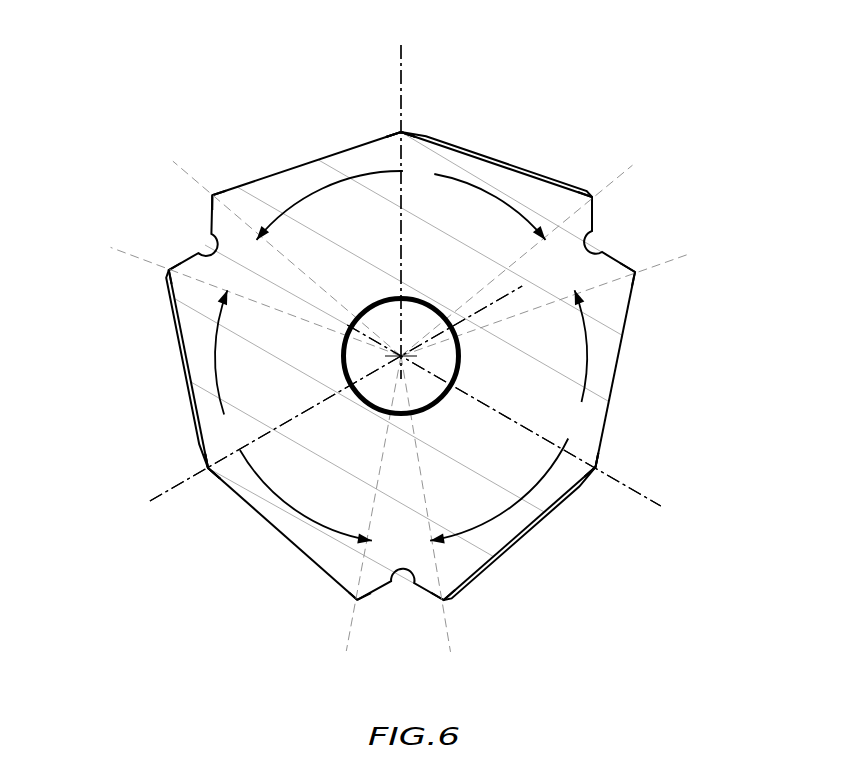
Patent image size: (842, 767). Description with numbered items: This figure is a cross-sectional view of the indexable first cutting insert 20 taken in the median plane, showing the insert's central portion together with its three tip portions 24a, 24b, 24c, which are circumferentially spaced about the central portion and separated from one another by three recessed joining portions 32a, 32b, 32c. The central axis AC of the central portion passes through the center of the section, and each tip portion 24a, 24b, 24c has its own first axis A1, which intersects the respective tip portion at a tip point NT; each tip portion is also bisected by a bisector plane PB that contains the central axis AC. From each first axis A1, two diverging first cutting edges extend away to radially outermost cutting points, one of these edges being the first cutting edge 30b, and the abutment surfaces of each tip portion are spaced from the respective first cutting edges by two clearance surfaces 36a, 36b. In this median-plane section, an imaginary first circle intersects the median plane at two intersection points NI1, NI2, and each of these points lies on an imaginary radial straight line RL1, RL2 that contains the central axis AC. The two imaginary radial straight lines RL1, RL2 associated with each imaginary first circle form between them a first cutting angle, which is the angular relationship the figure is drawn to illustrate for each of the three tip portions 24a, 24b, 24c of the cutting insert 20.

The first cutting insert 20 is at (389, 361).
The tip portion 24a is at (388, 148).
The tip portion 24b is at (602, 428).
The tip portion 24c is at (208, 441).
The first cutting edge 30b is at (517, 165).
The recessed joining portion 32a is at (599, 246).
The recessed joining portion 32b is at (400, 588).
The recessed joining portion 32c is at (204, 242).
The clearance surface 36a is at (288, 170).
The clearance surface 36b is at (537, 176).
The tip point NT is at (403, 129).
The intersection point NI1 is at (212, 198).
The intersection point NI2 is at (171, 272).
The imaginary radial straight line RL1 is at (436, 415).
The imaginary radial straight line RL2 is at (370, 410).
The first axis A1 is at (400, 274).
The bisector plane PB is at (400, 274).
The central axis AC is at (401, 358).